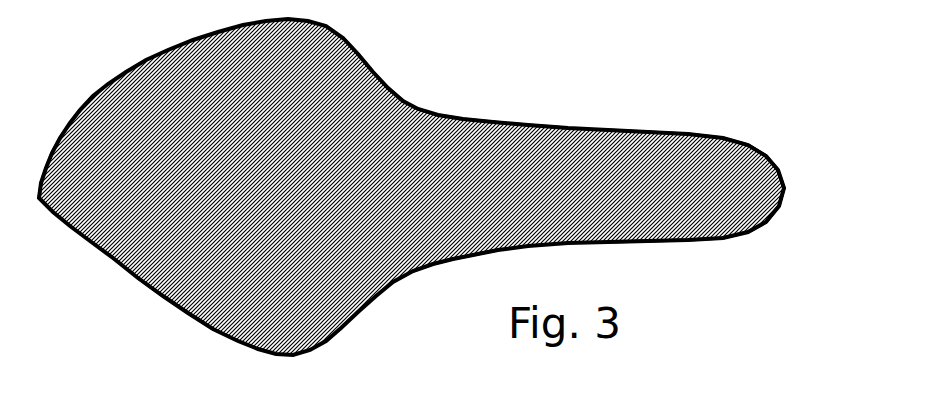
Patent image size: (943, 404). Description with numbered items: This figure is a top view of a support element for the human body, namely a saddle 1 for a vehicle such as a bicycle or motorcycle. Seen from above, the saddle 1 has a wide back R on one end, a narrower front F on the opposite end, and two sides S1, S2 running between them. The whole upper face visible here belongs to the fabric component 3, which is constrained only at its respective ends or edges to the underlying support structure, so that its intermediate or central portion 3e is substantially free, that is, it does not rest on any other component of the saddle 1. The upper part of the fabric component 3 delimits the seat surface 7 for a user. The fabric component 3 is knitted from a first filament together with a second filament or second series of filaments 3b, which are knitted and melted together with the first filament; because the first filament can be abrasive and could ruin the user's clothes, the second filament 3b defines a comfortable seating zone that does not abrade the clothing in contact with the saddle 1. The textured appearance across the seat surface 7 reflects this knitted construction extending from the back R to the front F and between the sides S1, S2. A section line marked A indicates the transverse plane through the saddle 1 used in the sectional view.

The saddle 1 is at (647, 254).
The fabric component 3 is at (622, 160).
The intermediate or central portion 3e is at (505, 180).
The second filament 3b is at (183, 285).
The seat surface 7 is at (374, 138).
The back R is at (70, 100).
The front F is at (777, 178).
The first side S1 is at (440, 253).
The second side S2 is at (490, 113).
The section line A- A is at (786, 391).